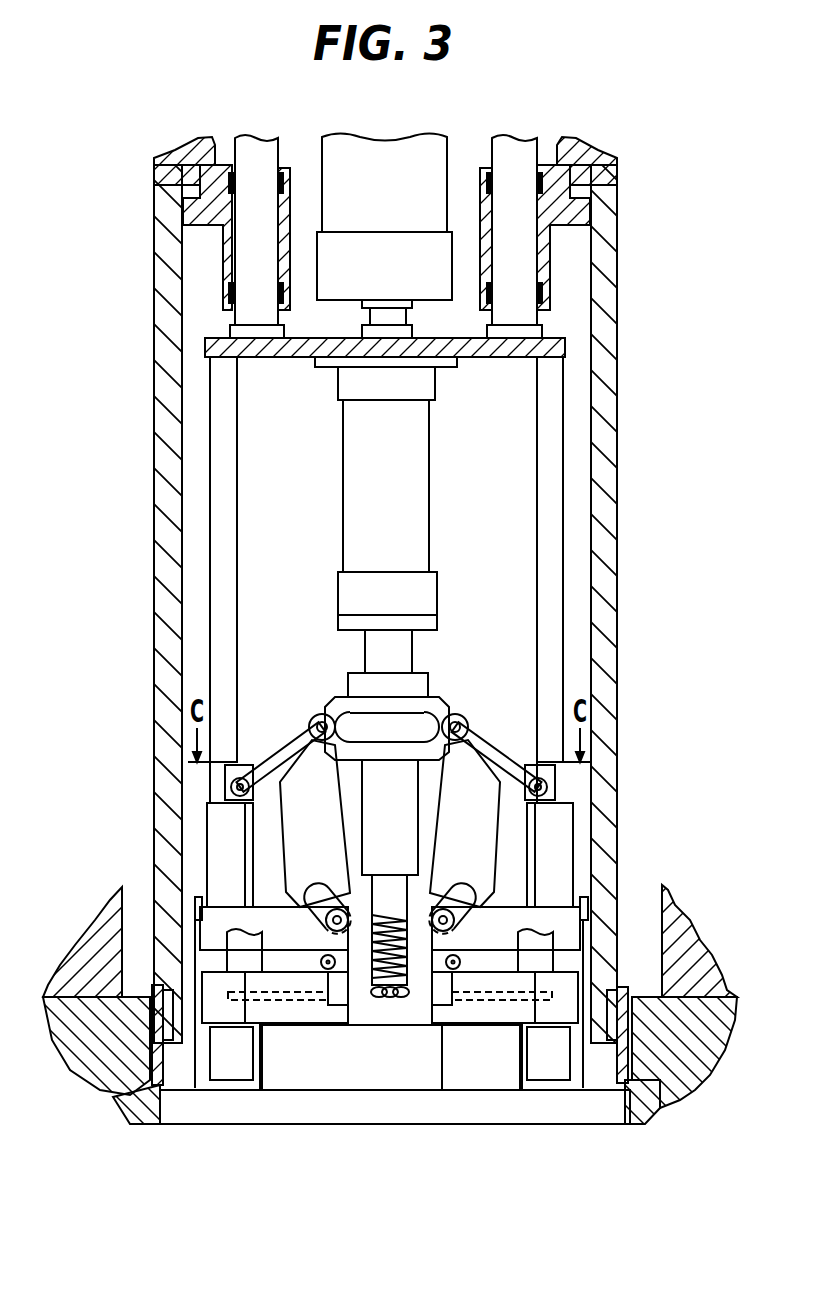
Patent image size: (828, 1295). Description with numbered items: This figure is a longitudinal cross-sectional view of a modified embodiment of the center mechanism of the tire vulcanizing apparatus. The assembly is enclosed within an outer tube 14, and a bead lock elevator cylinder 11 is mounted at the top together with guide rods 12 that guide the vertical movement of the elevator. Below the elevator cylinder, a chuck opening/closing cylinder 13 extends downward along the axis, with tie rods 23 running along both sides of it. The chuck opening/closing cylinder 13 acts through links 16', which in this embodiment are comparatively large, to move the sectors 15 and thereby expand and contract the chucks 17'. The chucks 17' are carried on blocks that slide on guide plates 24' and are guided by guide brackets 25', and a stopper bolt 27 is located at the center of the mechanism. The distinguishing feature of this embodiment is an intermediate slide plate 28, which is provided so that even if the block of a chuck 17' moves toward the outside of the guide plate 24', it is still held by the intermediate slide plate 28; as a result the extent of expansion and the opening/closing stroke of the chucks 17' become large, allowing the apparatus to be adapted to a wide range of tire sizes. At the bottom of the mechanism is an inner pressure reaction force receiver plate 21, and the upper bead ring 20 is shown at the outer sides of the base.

The bead lock elevator cylinder 11 is at (425, 137).
The guide rods 12 is at (272, 135).
The chuck opening/closing cylinder 13 is at (425, 493).
The outer tube 14 is at (612, 620).
The sectors 15 is at (562, 813).
The links 16' is at (390, 802).
The chucks 17' is at (440, 866).
The upper bead ring 20 is at (640, 1120).
The inner pressure reaction force receiver plate 21 is at (608, 1105).
The tie rods 23 is at (238, 612).
The guide plates 24' is at (352, 1102).
The guide brackets 25' is at (390, 1064).
The stopper bolt 27 is at (400, 883).
The intermediate slide plate 28 is at (440, 1013).